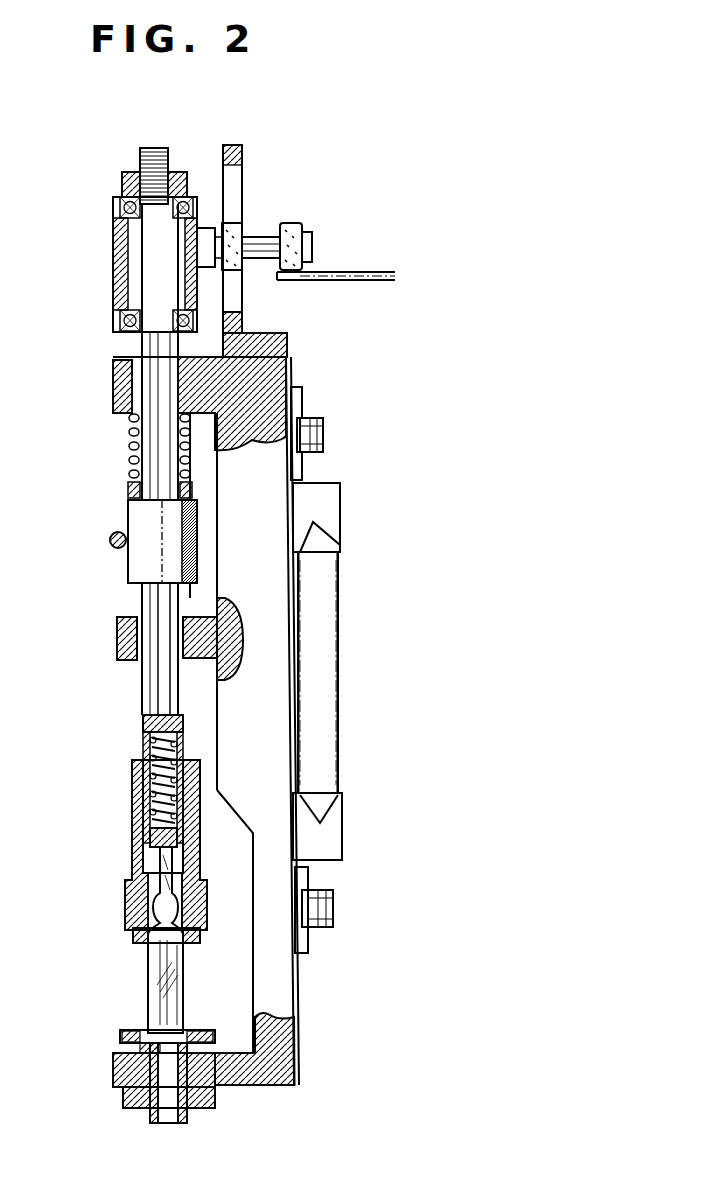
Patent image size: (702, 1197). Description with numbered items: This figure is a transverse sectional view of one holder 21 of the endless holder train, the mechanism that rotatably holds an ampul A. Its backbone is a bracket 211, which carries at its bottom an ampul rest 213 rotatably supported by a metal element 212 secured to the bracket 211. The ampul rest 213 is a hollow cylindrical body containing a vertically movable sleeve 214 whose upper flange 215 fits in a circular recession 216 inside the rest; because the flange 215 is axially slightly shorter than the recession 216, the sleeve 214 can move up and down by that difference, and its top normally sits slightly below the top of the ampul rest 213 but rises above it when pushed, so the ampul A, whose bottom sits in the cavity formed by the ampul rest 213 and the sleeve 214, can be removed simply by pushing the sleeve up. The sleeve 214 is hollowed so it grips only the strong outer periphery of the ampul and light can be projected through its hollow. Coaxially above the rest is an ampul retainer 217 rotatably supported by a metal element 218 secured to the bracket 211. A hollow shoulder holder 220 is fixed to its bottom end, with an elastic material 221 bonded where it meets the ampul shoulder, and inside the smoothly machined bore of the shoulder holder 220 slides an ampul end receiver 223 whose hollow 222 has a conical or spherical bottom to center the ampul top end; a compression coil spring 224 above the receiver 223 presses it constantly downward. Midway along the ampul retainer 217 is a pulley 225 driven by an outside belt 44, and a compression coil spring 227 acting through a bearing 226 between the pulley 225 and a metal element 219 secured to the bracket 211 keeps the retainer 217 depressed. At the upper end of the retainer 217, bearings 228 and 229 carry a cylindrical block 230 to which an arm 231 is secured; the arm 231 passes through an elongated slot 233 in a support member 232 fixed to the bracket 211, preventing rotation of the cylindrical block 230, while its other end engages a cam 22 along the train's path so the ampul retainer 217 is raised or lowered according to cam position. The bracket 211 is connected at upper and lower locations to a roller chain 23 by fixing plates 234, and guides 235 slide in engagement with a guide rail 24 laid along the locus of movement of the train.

The holder 21 is at (300, 697).
The cam 22 is at (345, 272).
The roller chain 23 is at (325, 436).
The guide rail 24 is at (325, 748).
The outside belt 44 is at (108, 548).
The bracket 211 is at (282, 590).
The metal element 212 is at (222, 1075).
The ampul rest 213 is at (120, 1035).
The sleeve 214 is at (150, 1113).
The flange 215 is at (118, 1058).
The circular recession 216 is at (195, 1030).
The ampul retainer 217 is at (142, 722).
The metal element 218 is at (115, 640).
The metal element 219 is at (112, 380).
The hollow shoulder holder 220 is at (125, 905).
The elastic material 221 is at (135, 940).
The hollow 222 is at (150, 865).
The ampul end receiver 223 is at (150, 835).
The compression coil spring 224 is at (140, 770).
The pulley 225 is at (130, 607).
The bearing 226 is at (124, 490).
The compression coil spring 227 is at (127, 438).
The bearing 228 is at (114, 318).
The bearing 229 is at (110, 210).
The cylindrical block 230 is at (112, 242).
The arm 231 is at (278, 237).
The support member 232 is at (233, 147).
The elongated slot 233 is at (236, 295).
The fixing plate 234 is at (303, 400).
The guide 235 is at (340, 513).
The ampul A is at (150, 982).